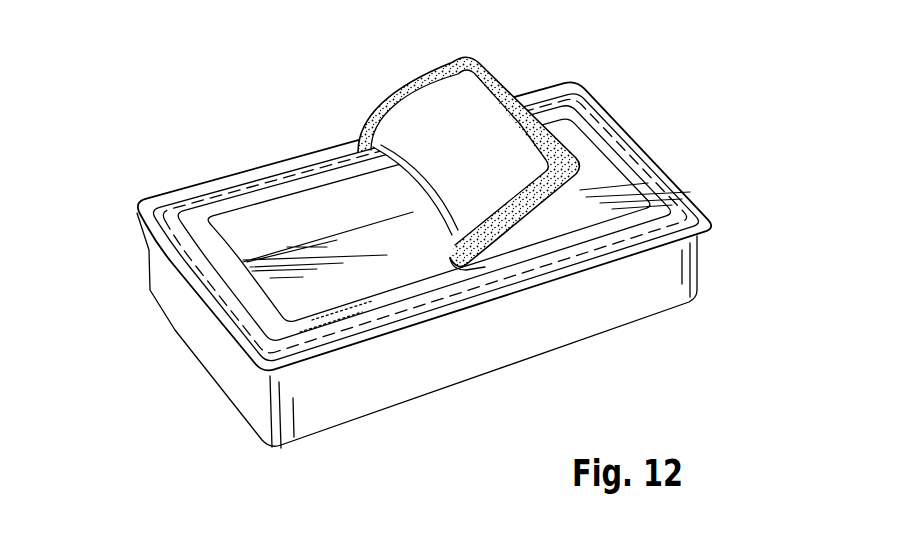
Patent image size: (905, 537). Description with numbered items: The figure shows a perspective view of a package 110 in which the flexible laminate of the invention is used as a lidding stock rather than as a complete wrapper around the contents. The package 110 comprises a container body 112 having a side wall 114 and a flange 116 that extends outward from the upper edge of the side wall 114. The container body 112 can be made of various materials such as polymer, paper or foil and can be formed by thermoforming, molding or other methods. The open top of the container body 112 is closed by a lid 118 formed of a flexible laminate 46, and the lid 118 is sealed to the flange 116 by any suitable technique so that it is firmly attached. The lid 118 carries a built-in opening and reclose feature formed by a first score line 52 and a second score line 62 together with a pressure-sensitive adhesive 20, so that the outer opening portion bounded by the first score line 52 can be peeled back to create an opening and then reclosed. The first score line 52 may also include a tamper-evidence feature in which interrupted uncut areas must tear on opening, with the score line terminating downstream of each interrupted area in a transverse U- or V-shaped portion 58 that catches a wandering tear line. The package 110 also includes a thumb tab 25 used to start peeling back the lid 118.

The package 110 is at (423, 224).
The container body 112 is at (223, 380).
The side wall 114 is at (237, 228).
The flange 116 is at (188, 190).
The lid 118 is at (590, 127).
The second score line 62 is at (640, 183).
The first score line 52 is at (567, 240).
The U- or V-shaped portion 58 is at (293, 334).
The pressure-sensitive adhesive 20 is at (467, 135).
The thumb tab 25 is at (560, 160).
The flexible laminate 46 is at (400, 125).